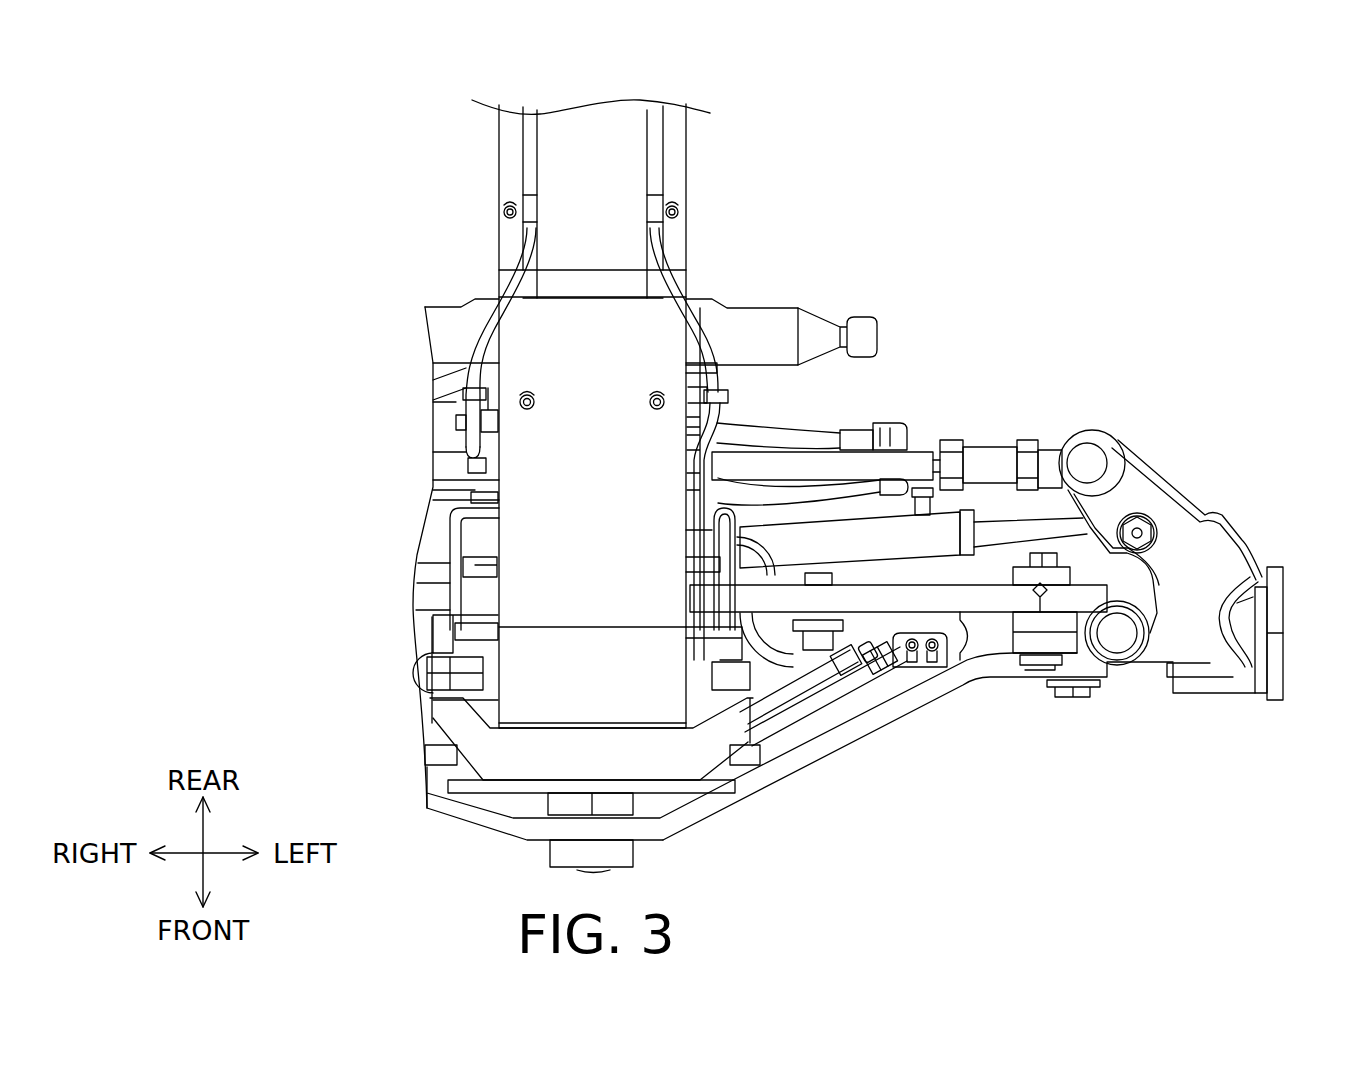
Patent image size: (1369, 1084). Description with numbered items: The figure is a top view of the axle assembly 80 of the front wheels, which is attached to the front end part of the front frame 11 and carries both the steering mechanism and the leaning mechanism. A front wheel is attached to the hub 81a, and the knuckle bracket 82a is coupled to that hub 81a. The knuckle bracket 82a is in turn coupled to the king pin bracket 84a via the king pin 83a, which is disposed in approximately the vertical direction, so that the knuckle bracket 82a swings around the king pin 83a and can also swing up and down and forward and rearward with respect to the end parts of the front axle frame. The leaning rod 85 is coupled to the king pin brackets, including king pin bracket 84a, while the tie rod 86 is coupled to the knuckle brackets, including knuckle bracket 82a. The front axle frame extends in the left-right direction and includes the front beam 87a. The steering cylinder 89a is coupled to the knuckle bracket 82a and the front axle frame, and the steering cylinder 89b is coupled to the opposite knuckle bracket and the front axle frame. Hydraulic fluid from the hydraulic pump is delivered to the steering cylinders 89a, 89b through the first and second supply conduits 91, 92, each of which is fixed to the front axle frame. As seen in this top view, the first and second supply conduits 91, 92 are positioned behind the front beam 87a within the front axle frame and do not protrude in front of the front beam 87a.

The front frame 11 is at (585, 122).
The axle assembly 80 is at (402, 645).
The hub 81a is at (1275, 570).
The knuckle bracket 82a is at (1137, 490).
The king pin 83a is at (1115, 633).
The king pin bracket 84a is at (1045, 638).
The leaning rod 85 is at (953, 600).
The tie rod 86 is at (907, 460).
The front beam 87a is at (873, 723).
The steering cylinder 89a is at (945, 518).
The steering cylinder 89b is at (440, 530).
The first supply conduit 91 is at (523, 257).
The second supply conduit 92 is at (655, 240).